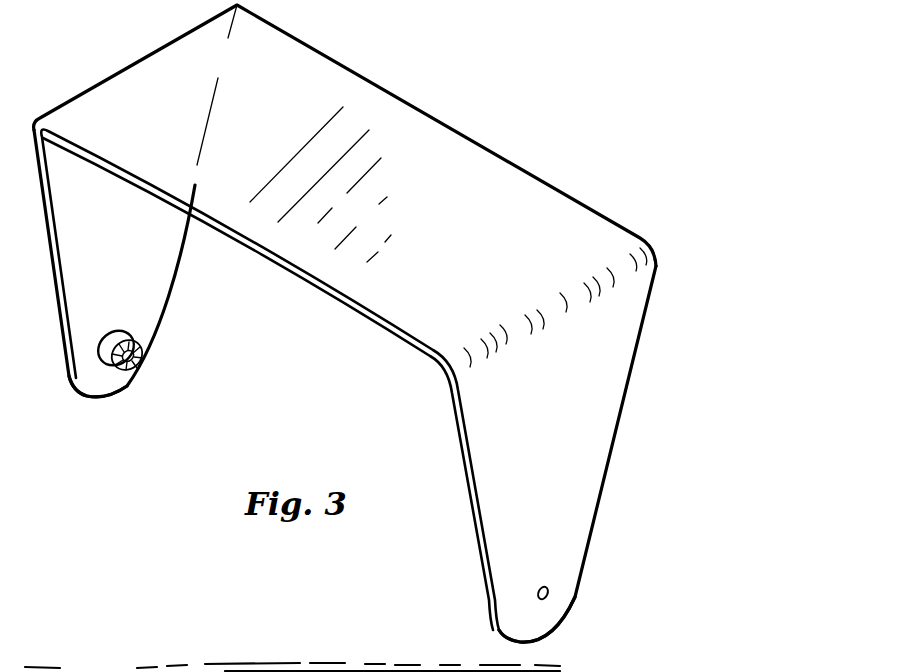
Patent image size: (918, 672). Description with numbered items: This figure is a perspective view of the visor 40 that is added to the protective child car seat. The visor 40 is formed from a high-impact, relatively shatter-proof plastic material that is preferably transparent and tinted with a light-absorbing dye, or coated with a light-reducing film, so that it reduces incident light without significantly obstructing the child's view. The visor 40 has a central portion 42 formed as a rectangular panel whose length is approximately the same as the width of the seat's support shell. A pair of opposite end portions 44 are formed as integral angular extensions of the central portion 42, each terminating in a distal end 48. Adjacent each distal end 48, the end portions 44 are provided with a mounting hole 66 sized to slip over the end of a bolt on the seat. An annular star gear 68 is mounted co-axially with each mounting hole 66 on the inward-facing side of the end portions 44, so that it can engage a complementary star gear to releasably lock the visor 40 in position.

The visor 40 is at (403, 37).
The central portion 42 is at (403, 120).
The end portions 44 is at (143, 280).
The distal end 48 is at (83, 397).
The mounting hole 66 is at (552, 595).
The annular star gear 68 is at (147, 337).